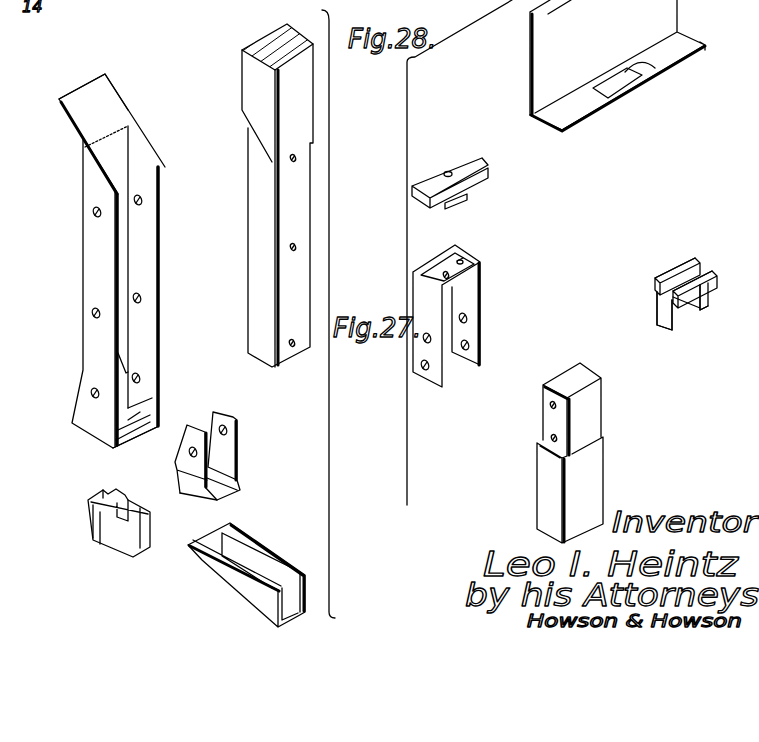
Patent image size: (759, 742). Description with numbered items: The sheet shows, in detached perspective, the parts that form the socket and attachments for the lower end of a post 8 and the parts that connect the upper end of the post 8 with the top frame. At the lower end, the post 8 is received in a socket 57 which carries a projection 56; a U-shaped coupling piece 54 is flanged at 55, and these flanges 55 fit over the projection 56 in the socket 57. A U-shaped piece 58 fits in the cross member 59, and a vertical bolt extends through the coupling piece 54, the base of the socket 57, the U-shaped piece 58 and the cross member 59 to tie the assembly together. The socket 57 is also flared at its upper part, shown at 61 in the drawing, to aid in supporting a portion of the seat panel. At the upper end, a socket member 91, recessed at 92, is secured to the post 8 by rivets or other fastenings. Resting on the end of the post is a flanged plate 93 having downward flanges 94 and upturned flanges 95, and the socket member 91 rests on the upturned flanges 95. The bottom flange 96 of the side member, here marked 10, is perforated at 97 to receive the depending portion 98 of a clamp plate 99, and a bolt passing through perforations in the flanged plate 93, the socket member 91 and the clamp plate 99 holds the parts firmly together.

In FIG. 28, the post 8 is at (583, 462).
In FIG. 28, the rail 10 is at (603, 65).
In FIG. 27, the U-shaped coupling piece 54 is at (217, 468).
In FIG. 27, the flanges 55 is at (192, 472).
In FIG. 27, the projection 56 is at (130, 414).
In FIG. 27, the socket 57 is at (142, 319).
In FIG. 27, the U-shaped piece 58 is at (150, 533).
In FIG. 27, the cross member 59 is at (233, 553).
In FIG. 27, the inclined top plate 61 is at (80, 107).
In FIG. 28, the socket member 91 is at (468, 305).
In FIG. 28, the recess 92 is at (466, 258).
In FIG. 28, the flanged plate 93 is at (698, 275).
In FIG. 28, the downward flanges 94 is at (695, 305).
In FIG. 28, the upturned flanges 95 is at (712, 277).
In FIG. 28, the bottom flange 96 is at (553, 116).
In FIG. 28, the perforation 97 is at (658, 68).
In FIG. 28, the depending portion 98 is at (470, 197).
In FIG. 28, the clamp plate 99 is at (462, 163).